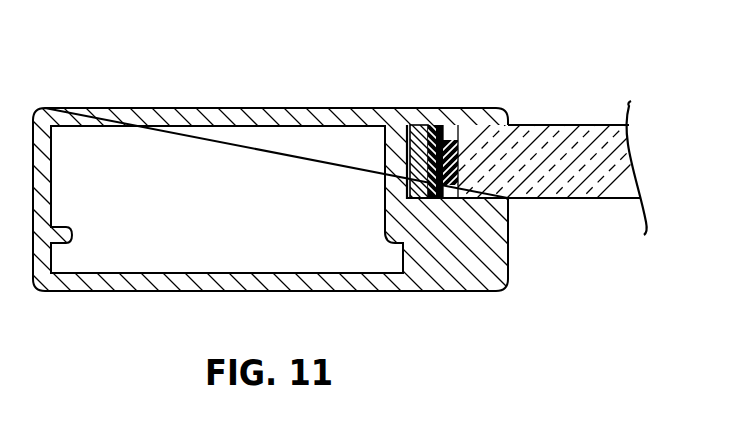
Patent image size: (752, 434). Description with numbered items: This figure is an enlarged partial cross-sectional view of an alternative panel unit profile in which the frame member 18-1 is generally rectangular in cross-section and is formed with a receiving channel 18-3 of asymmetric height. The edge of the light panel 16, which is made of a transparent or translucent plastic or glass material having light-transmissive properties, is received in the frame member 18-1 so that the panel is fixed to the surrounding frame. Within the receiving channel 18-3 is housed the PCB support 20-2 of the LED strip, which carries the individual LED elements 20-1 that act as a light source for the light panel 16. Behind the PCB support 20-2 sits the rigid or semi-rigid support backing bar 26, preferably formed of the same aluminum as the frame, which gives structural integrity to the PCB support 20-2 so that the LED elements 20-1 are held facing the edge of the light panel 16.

The frame member 18-1 is at (77, 115).
The receiving channel 18-3 is at (486, 147).
The LED element 20-1 is at (450, 133).
The PCB support 20-2 is at (433, 130).
The support backing bar 26 is at (417, 152).
The light panel 16 is at (578, 159).